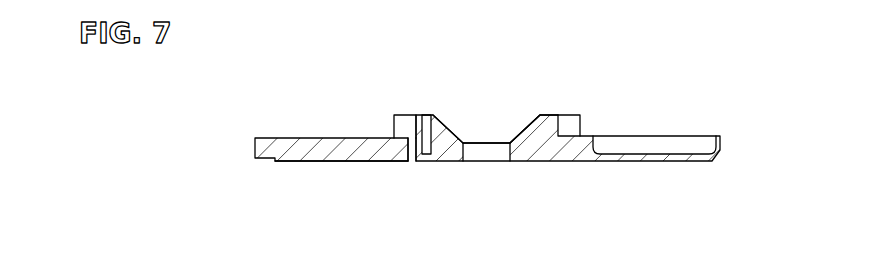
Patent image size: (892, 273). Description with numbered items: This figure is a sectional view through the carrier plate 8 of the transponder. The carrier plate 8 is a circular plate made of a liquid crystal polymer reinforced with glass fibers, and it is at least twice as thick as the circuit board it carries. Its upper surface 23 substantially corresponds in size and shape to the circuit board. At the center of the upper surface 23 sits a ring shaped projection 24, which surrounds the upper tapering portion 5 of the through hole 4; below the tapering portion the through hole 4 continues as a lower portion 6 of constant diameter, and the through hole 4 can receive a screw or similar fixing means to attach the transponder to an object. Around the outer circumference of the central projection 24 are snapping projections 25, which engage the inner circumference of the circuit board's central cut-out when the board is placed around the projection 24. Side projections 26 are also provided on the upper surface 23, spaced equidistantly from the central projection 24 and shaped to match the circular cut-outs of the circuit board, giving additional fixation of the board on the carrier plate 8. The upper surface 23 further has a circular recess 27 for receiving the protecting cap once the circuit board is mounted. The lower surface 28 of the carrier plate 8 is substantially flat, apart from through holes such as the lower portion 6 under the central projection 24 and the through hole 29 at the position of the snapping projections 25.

The through hole 4 is at (510, 91).
The upper tapering portion 5 is at (455, 115).
The lower portion 6 is at (469, 152).
The carrier plate 8 is at (204, 132).
The upper surface 23 is at (315, 138).
The ring shaped projection 24 is at (545, 115).
The snapping projections 25 is at (416, 118).
The side projections 26 is at (396, 116).
The circular recess 27 is at (714, 143).
The lower surface 28 is at (322, 161).
The through hole 29 is at (412, 161).